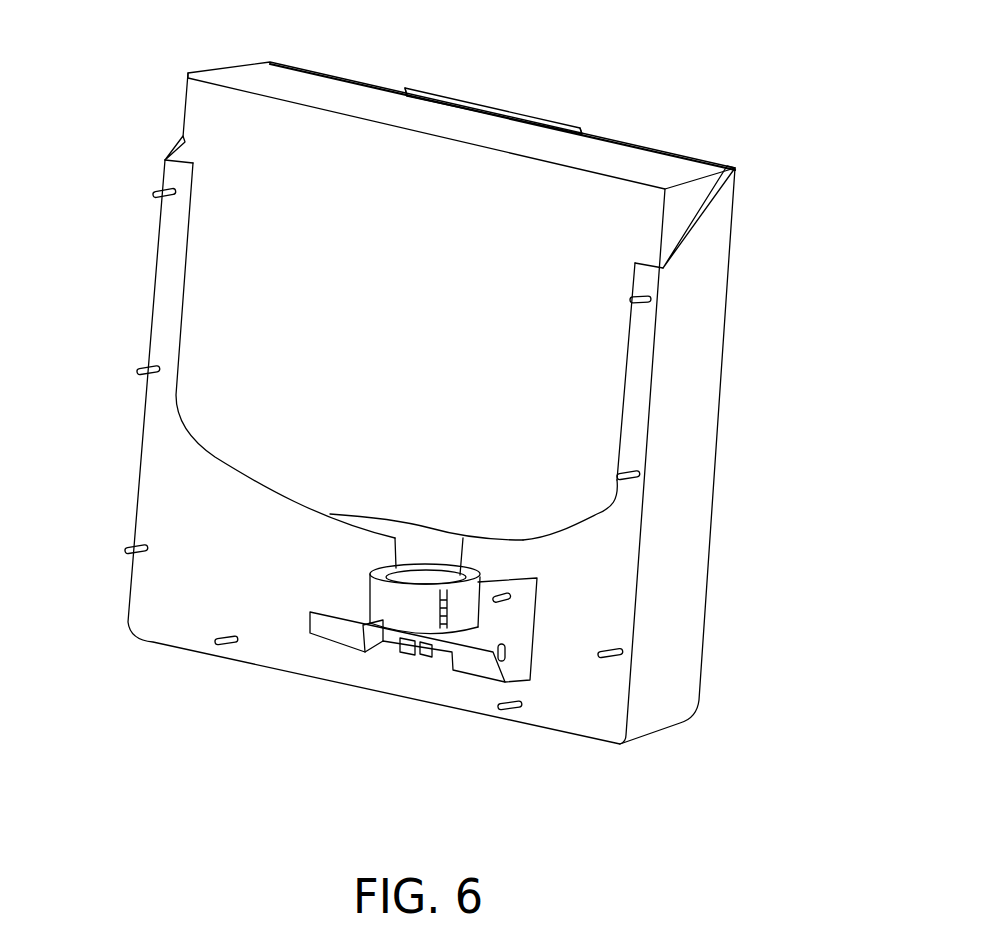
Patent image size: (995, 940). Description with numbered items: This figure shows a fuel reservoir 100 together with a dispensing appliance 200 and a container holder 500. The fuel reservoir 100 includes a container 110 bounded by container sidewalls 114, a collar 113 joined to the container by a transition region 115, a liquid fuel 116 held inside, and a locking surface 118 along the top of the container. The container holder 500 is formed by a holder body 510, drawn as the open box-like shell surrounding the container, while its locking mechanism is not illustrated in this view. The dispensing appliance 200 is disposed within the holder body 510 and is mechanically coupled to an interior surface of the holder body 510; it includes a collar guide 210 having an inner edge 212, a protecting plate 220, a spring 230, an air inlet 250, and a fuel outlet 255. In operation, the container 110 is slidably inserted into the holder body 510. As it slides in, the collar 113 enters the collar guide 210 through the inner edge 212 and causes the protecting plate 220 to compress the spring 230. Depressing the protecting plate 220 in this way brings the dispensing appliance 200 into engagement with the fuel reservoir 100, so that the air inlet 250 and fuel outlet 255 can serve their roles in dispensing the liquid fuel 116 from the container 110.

The fuel reservoir 100 is at (637, 116).
The container 110 is at (212, 233).
The collar 113 is at (410, 553).
The container sidewalls 114 is at (203, 302).
The transition region 115 is at (330, 514).
The liquid fuel 116 is at (580, 410).
The locking surface 118 is at (474, 104).
The dispensing appliance 200 is at (472, 732).
The collar guide 210 is at (372, 603).
The inner edge 212 is at (365, 570).
The protecting plate 220 is at (457, 607).
The spring 230 is at (398, 637).
The air inlet 250 is at (412, 653).
The fuel outlet 255 is at (498, 662).
The container holder 500 is at (740, 519).
The holder body 510 is at (708, 302).